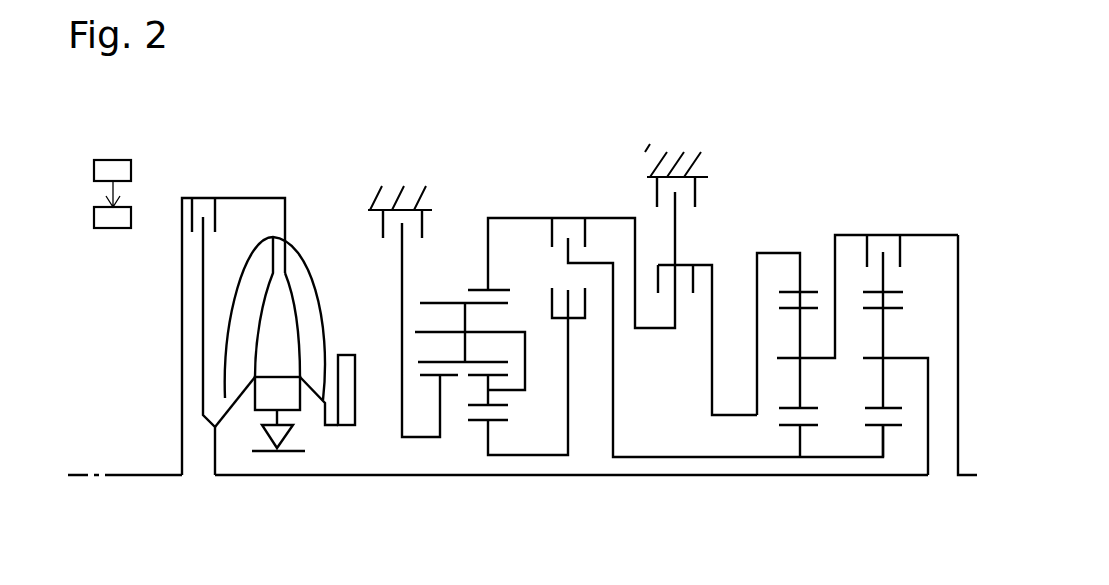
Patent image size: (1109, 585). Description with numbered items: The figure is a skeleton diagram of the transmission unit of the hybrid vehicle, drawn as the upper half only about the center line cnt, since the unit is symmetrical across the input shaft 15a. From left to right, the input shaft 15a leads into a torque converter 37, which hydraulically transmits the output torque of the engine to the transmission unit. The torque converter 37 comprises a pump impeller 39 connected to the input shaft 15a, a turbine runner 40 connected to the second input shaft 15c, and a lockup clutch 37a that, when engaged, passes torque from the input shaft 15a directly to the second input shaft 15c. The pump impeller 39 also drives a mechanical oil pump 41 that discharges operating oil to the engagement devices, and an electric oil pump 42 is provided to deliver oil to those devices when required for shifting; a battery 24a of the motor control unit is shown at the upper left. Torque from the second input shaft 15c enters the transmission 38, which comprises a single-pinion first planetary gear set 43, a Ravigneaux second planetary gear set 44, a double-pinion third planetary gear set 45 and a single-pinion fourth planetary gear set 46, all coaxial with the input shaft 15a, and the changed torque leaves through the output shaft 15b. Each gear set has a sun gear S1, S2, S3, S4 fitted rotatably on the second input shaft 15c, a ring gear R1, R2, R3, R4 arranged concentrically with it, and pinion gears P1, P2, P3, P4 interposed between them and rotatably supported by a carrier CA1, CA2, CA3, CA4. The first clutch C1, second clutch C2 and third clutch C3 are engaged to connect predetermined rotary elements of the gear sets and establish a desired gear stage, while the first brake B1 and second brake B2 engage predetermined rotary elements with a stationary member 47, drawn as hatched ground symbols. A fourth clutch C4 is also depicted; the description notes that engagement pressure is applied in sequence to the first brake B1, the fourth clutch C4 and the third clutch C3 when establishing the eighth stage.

The battery 24a is at (131, 172).
The electric oil pump 42 is at (131, 217).
The torque converter 37 is at (277, 283).
The lockup clutch 37a is at (218, 178).
The pump impeller 39 is at (297, 260).
The turbine runner 40 is at (262, 258).
The mechanical oil pump 41 is at (343, 360).
The transmission 38 is at (566, 152).
The stationary member 47 is at (398, 205).
The second planetary gear set 44 is at (515, 364).
The third planetary gear set 45 is at (527, 425).
The first planetary gear set 43 is at (842, 378).
The fourth planetary gear set 46 is at (887, 407).
The first brake B1 is at (422, 225).
The second brake B2 is at (695, 192).
The first clutch C1 is at (585, 233).
The second clutch C2 is at (585, 305).
The third clutch C3 is at (685, 263).
The fourth clutch C4 is at (902, 250).
The sun gear S1 is at (783, 425).
The sun gear S2 is at (428, 377).
The sun gear S3 is at (500, 420).
The sun gear S4 is at (875, 425).
The pinion gear P1 is at (805, 407).
The pinion gear P2 is at (437, 303).
The pinion gear P3 is at (507, 405).
The pinion gear P4 is at (897, 408).
The ring gear R1 is at (783, 292).
The ring gear R2 is at (473, 287).
The ring gear R3 is at (571, 286).
The ring gear R4 is at (903, 290).
The carrier CA1 is at (815, 355).
The carrier CA2 is at (525, 362).
The carrier CA3 is at (527, 423).
The carrier CA4 is at (903, 357).
The input shaft 15a is at (133, 462).
The output shaft 15b is at (975, 463).
The second input shaft 15c is at (308, 476).
The center axis line cnt is at (105, 476).